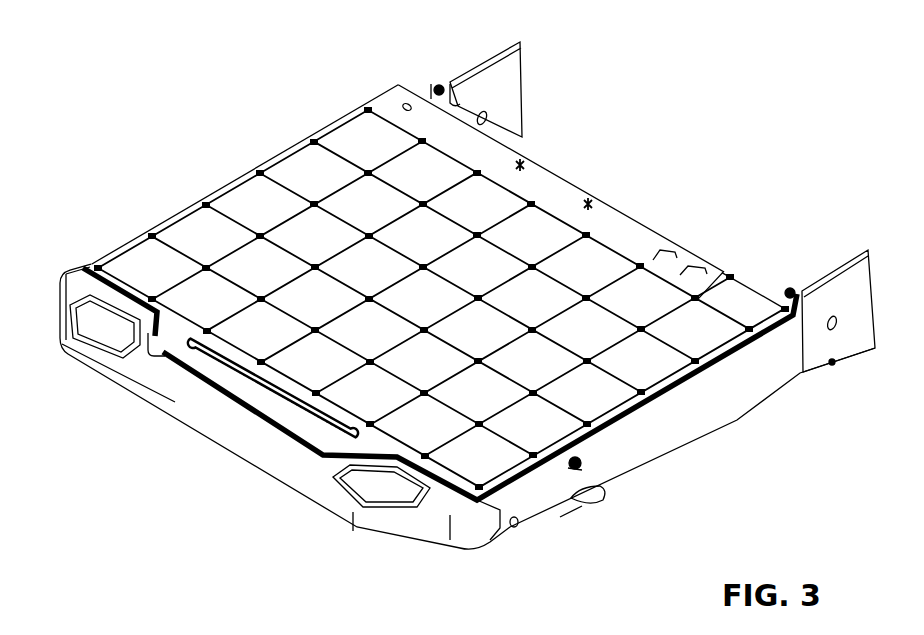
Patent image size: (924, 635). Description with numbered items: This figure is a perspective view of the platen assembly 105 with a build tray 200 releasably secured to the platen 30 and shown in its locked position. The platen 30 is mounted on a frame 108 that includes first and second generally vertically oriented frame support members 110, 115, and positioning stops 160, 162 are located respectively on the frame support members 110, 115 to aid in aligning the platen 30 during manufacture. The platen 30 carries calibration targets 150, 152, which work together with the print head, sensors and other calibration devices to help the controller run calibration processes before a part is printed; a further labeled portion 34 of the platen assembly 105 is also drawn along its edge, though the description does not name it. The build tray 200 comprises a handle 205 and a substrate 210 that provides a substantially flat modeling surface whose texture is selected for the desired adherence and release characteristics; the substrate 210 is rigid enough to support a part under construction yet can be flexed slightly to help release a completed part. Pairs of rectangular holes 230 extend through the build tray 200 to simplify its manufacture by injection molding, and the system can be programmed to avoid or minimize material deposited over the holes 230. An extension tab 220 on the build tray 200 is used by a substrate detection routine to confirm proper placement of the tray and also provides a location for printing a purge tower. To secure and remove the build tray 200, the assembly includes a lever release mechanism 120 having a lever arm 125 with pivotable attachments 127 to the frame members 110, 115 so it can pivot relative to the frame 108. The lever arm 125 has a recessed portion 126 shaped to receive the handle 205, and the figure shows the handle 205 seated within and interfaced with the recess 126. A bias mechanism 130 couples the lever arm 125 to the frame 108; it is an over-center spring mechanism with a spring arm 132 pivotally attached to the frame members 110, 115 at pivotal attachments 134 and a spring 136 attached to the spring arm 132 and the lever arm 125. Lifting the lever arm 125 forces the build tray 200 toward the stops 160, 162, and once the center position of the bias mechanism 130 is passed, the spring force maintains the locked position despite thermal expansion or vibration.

The platen assembly 105 is at (214, 102).
The frame 108 is at (652, 118).
The first frame support member 110 is at (487, 88).
The second frame support member 115 is at (843, 292).
The lever release mechanism 120 is at (192, 481).
The lever arm 125 is at (327, 507).
The recessed portion 126 is at (150, 355).
The pivotable attachments 127 is at (503, 513).
The bias mechanism 130 is at (614, 545).
The spring arm 132 is at (600, 500).
The pivotal attachments 134 is at (583, 462).
The spring 136 is at (577, 508).
The calibration target 150 is at (521, 160).
The calibration target 152 is at (590, 200).
The positioning stop 160 is at (430, 88).
The positioning stop 162 is at (832, 364).
The build tray 200 is at (227, 183).
The handle 205 is at (185, 353).
The substrate 210 is at (203, 236).
The extension tab 220 is at (738, 295).
The rectangular holes 230 is at (150, 234).
The platen 30 is at (497, 137).
The mounting rail 34 is at (623, 230).